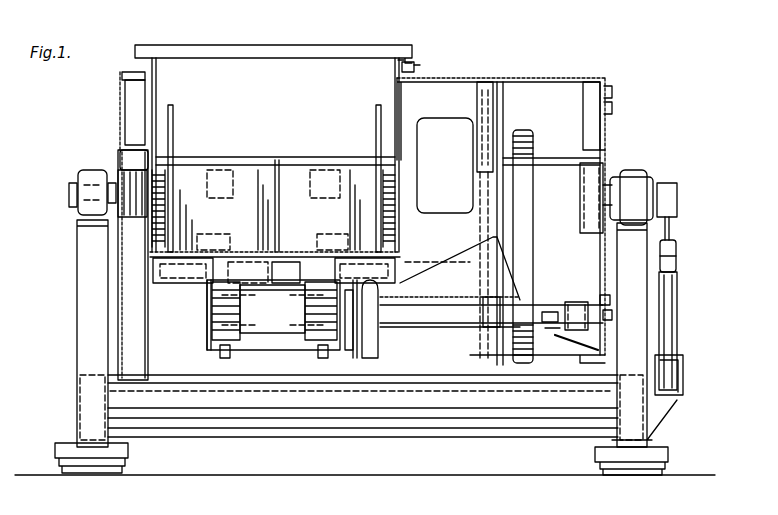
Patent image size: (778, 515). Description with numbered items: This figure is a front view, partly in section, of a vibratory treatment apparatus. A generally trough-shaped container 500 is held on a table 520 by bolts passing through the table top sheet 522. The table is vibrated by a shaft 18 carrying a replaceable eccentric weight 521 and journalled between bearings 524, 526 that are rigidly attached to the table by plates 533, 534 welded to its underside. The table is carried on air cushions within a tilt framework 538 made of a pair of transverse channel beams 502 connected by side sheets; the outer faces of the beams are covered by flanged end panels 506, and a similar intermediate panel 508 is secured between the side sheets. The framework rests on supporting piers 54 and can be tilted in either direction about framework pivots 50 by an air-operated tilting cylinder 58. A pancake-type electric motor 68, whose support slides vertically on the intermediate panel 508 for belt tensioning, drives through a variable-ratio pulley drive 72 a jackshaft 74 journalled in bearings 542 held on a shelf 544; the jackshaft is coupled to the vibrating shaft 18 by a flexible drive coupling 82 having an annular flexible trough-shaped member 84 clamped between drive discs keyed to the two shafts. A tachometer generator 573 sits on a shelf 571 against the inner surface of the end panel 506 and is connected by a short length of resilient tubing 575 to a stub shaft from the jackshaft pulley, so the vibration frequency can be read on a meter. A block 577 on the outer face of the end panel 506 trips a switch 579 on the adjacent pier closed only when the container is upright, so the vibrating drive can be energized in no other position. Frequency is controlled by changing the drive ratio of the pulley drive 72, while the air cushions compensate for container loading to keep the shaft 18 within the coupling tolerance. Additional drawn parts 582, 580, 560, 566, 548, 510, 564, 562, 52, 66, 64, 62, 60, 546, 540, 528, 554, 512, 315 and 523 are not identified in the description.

The container 500 is at (288, 46).
The hinge 582 is at (412, 60).
The latch 580 is at (416, 65).
The housing 560 is at (525, 78).
The housing fastener 566 is at (606, 84).
The posts 548 is at (378, 108).
The electric motor 68 is at (428, 132).
The panel 510 is at (490, 110).
The intermediate panel 508 is at (551, 123).
The bracket 564 is at (120, 78).
The plate 562 is at (135, 108).
The channel beams 502 is at (120, 160).
The tilt framework 538 is at (605, 160).
The shaft 52 is at (630, 172).
The bearing 66 is at (655, 182).
The framework pivots 50 is at (678, 198).
The rod 64 is at (670, 228).
The coupling 62 is at (676, 252).
The tilting cylinder 58 is at (672, 326).
The cylinder base 60 is at (683, 372).
The pulley drive 72 is at (537, 198).
The table 520 is at (210, 318).
The outlet 546 is at (156, 268).
The end panel 506 is at (125, 297).
The eccentric weight 521 is at (222, 322).
The plate 533 is at (248, 273).
The plate 534 is at (302, 278).
The motor 540 is at (215, 294).
The bearing 524 is at (240, 313).
The bearing 526 is at (309, 313).
The mounting feet 528 is at (320, 358).
The vibrating shaft 18 is at (356, 345).
The flexible trough-shaped member 84 is at (351, 352).
The flexible drive coupling 82 is at (372, 355).
The pocket 554 is at (327, 190).
The table top sheet 522 is at (398, 258).
The brace plate 512 is at (493, 240).
The shelf 544 is at (420, 262).
The jackshaft 74 is at (440, 300).
The bearings 542 is at (400, 320).
The resilient tubing coupling 575 is at (546, 312).
The block 577 is at (610, 300).
The switch 579 is at (612, 315).
The tachometer generator 573 is at (550, 330).
The shelf 571 is at (560, 340).
The piers 54 is at (80, 362).
The base plate 315 is at (62, 472).
The rails 523 is at (213, 430).